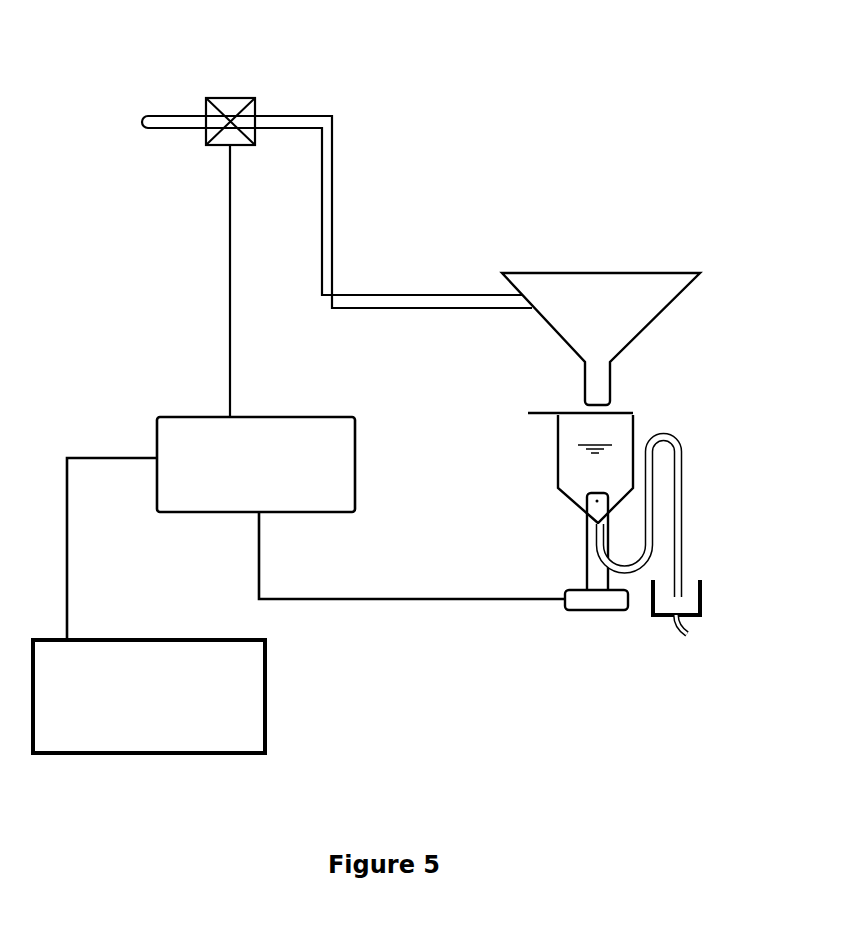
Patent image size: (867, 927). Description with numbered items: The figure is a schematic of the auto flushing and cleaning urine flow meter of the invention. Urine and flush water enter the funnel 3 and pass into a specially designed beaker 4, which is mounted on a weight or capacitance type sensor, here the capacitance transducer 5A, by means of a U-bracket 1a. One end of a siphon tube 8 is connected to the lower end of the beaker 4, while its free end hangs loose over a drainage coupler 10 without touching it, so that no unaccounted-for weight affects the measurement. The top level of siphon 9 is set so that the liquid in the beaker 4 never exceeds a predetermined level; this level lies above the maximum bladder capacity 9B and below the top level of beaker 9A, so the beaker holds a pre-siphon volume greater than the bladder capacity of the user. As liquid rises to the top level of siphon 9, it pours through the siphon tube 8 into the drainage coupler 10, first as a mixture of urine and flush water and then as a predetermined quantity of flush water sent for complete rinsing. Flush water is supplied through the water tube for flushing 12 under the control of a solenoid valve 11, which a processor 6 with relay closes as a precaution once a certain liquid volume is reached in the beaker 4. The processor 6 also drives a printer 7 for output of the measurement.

The U-bracket 1a is at (582, 573).
The funnel 3 is at (605, 262).
The beaker 4 is at (545, 452).
The capacitance transducer 5A is at (596, 617).
The processor 6 is at (220, 494).
The printer 7 is at (79, 726).
The siphon tube 8 is at (689, 533).
The top level of siphon 9 is at (675, 425).
The top level of beaker 9A is at (539, 405).
The maximum bladder capacity 9B is at (606, 437).
The drainage coupler 10 is at (706, 596).
The solenoid valve 11 is at (229, 88).
The water tube for flushing 12 is at (305, 104).